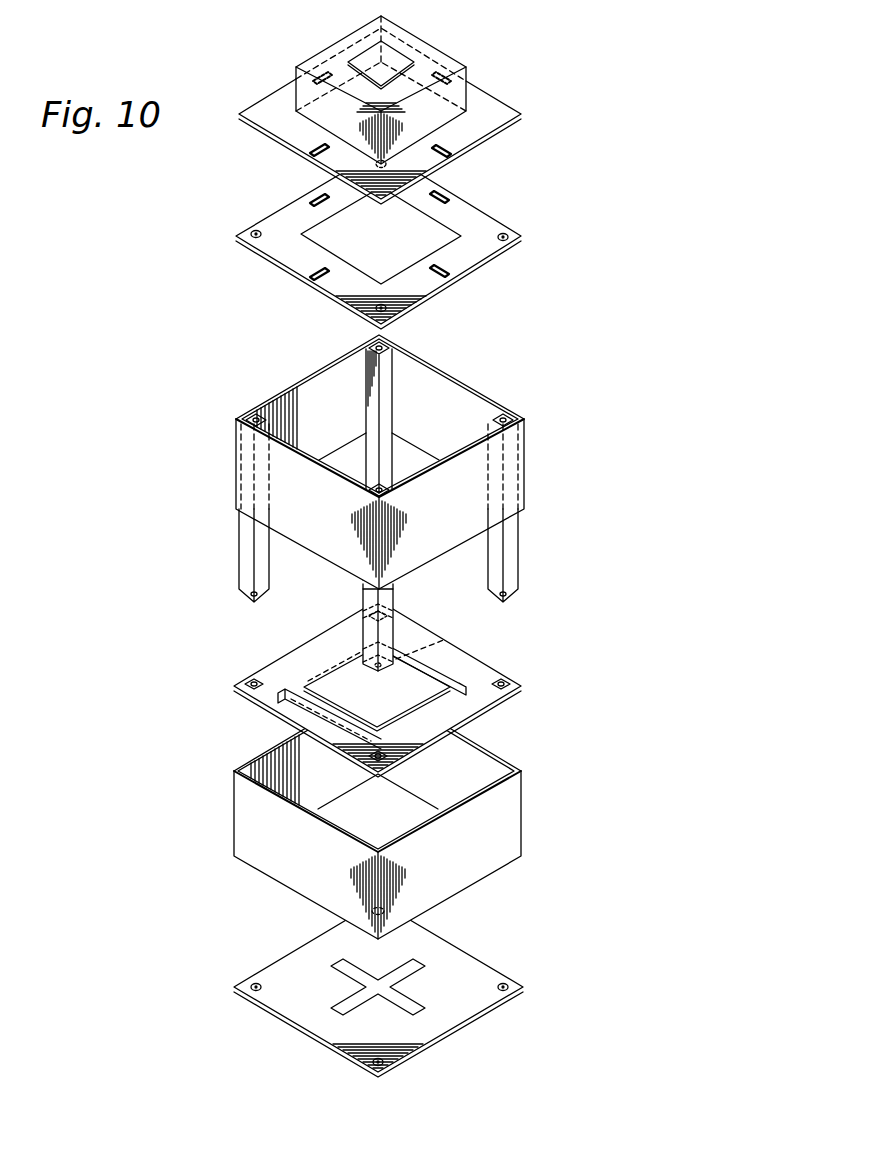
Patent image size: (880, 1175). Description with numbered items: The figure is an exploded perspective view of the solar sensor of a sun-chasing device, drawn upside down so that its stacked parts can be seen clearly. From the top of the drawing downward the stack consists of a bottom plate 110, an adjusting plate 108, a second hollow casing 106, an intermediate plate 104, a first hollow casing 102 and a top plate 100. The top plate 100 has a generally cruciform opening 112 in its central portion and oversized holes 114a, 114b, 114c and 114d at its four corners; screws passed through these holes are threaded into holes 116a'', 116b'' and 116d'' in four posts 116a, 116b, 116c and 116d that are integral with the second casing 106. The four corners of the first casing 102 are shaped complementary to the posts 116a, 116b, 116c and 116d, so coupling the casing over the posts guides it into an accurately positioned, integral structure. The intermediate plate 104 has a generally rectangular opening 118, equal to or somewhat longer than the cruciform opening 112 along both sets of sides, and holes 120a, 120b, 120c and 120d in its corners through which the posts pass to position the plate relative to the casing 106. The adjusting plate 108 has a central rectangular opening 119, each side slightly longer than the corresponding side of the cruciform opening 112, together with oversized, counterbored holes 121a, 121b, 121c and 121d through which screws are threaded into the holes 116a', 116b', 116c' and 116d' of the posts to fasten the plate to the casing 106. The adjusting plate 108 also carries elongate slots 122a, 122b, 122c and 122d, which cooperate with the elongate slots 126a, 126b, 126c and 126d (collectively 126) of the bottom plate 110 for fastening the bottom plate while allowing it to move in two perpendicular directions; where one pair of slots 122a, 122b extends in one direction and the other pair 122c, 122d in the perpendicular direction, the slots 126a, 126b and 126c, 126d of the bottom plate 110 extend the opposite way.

The top plate 100 is at (445, 935).
The first hollow casing 102 is at (509, 799).
The intermediate plate 104 is at (475, 691).
The second hollow casing 106 is at (418, 547).
The adjusting plate 108 is at (475, 249).
The bottom plate 110 is at (485, 96).
The cruciform opening 112 is at (388, 981).
The oversized hole 114a is at (248, 976).
The oversized hole 114b is at (385, 1056).
The oversized hole 114c is at (376, 903).
The oversized hole 114d is at (496, 976).
The post 116a is at (215, 513).
The post 116b is at (412, 582).
The post 116c is at (413, 421).
The post 116d is at (542, 513).
The threaded hole 116a' is at (213, 406).
The threaded hole 116b' is at (427, 504).
The threaded hole 116c' is at (427, 350).
The threaded hole 116d' is at (539, 399).
The threaded hole 116a'' is at (295, 611).
The threaded hole 116b'' is at (482, 647).
The threaded hole 116d'' is at (547, 600).
The rectangular opening 118 is at (421, 689).
The rectangular opening 119 is at (393, 254).
The hole 120a is at (243, 674).
The hole 120b is at (383, 754).
The hole 120c is at (389, 611).
The hole 120d is at (499, 675).
The oversized hole 121a is at (246, 226).
The oversized hole 121b is at (373, 303).
The oversized hole 121c is at (484, 129).
The oversized hole 121d is at (499, 229).
The elongate slot 122a is at (311, 267).
The elongate slot 122b is at (438, 188).
The elongate slot 122c is at (311, 188).
The elongate slot 122d is at (433, 264).
The transparent block 126 is at (381, 90).
The elongate slot 126a is at (438, 67).
The elongate slot 126b is at (298, 141).
The elongate slot 126c is at (305, 67).
The elongate slot 126d is at (441, 144).